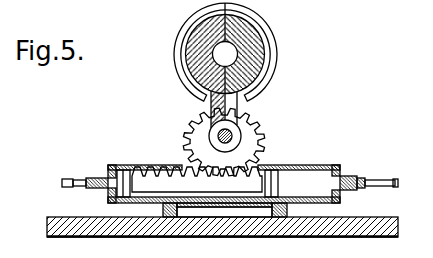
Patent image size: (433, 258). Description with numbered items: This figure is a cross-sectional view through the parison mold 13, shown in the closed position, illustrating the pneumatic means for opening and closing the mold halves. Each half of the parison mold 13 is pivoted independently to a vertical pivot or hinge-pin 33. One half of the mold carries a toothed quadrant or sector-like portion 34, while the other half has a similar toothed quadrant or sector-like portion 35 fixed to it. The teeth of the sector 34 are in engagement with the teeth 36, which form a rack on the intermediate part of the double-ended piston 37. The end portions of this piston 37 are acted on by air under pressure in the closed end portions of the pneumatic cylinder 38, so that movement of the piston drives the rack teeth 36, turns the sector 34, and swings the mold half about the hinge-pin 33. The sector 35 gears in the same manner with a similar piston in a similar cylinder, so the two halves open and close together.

The parison mold 13 is at (188, 58).
The vertical pivot or hinge-pin 33 is at (233, 134).
The toothed quadrant or sector-like portion 34 is at (184, 143).
The toothed quadrant or sector-like portion 35 is at (266, 150).
The teeth forming a rack 36 is at (150, 180).
The double-ended piston 37 is at (337, 199).
The pneumatic cylinder 38 is at (320, 166).